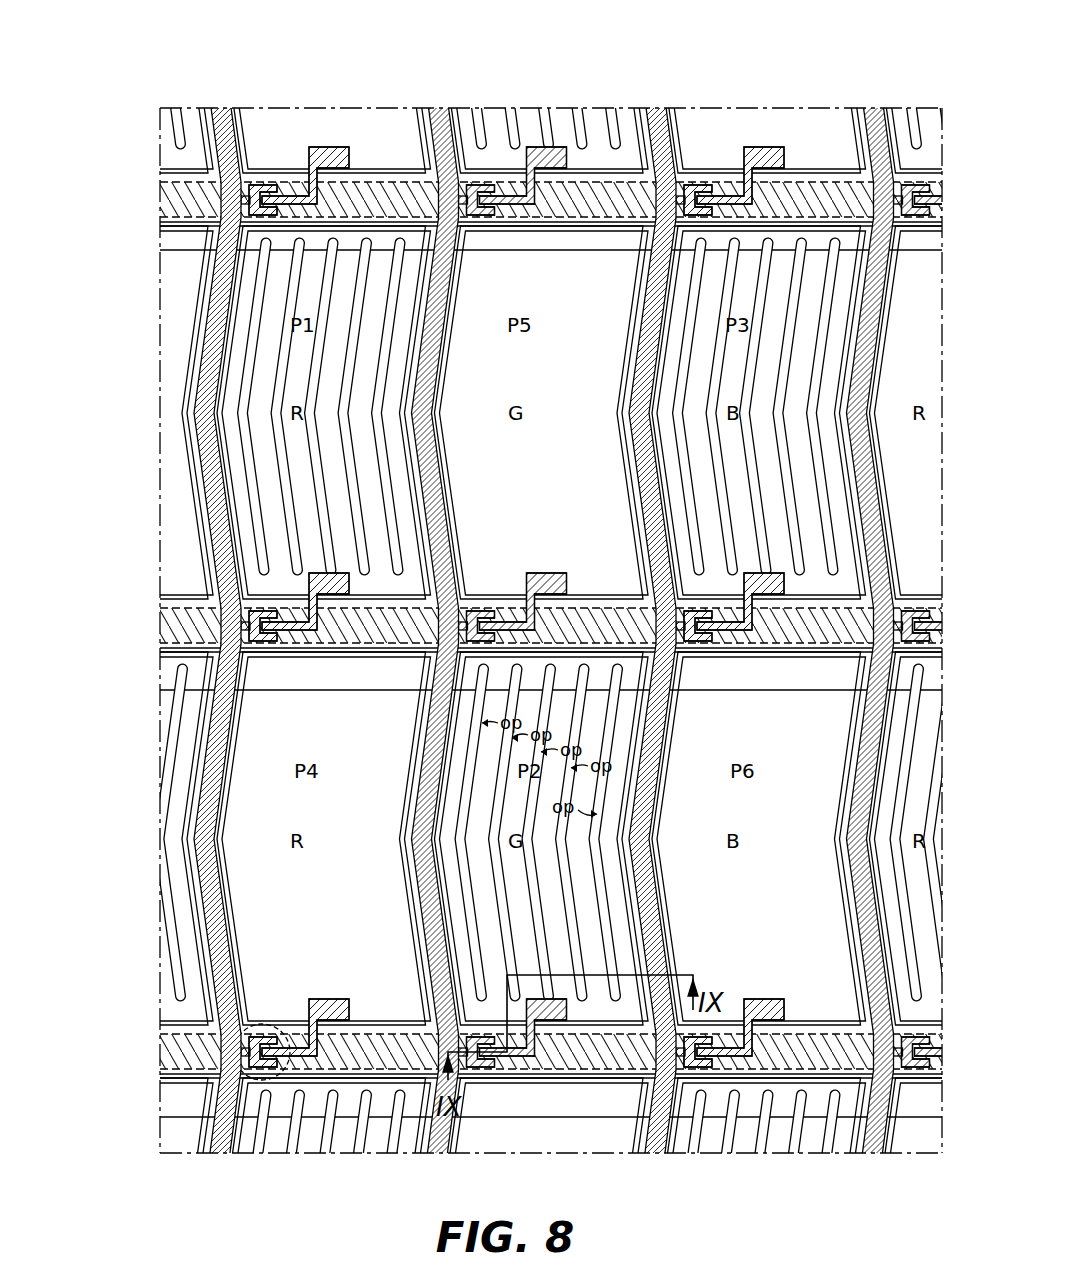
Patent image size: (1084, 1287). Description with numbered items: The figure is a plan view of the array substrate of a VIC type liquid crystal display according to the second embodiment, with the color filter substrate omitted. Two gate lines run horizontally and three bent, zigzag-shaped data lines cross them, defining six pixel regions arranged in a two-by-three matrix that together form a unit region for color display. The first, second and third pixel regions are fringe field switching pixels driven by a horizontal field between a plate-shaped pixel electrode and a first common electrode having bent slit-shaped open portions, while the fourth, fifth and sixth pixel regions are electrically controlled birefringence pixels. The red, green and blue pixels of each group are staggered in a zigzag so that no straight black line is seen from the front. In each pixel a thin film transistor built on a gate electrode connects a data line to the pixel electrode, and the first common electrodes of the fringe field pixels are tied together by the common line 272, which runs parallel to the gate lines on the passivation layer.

The common line 272 is at (178, 240).